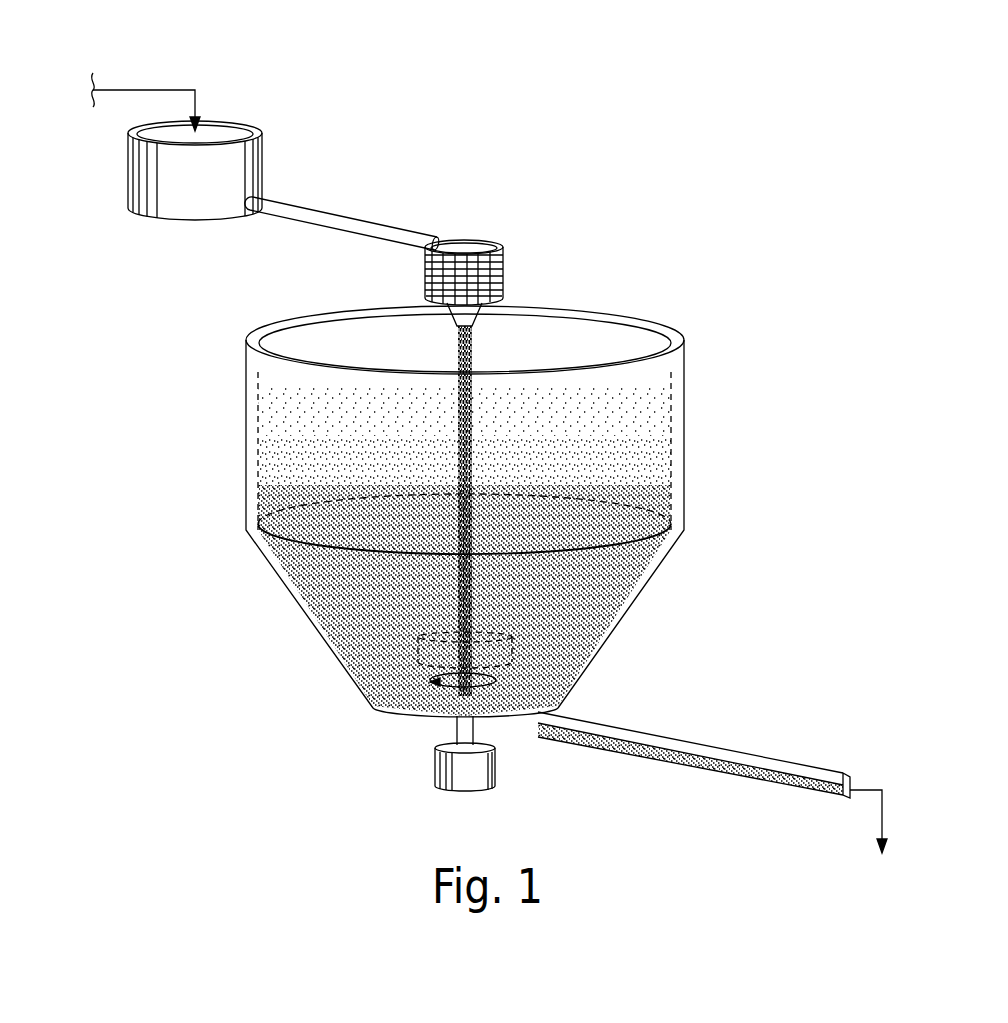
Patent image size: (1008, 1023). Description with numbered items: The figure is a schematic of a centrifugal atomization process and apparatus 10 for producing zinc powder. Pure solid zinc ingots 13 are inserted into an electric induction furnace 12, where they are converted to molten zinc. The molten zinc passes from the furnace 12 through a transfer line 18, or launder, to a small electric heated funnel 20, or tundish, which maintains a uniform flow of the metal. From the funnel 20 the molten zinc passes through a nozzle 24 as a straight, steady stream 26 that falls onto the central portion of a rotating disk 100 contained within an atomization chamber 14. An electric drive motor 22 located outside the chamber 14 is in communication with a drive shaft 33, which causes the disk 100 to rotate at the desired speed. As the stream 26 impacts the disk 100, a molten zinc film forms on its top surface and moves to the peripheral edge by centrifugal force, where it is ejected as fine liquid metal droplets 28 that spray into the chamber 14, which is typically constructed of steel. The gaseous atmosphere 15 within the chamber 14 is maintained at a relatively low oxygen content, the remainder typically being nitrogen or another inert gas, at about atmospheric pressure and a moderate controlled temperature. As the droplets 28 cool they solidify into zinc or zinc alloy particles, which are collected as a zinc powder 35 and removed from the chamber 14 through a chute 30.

The centrifugal atomization apparatus 10 is at (658, 228).
The electric induction furnace 12 is at (127, 168).
The zinc ingots 13 is at (123, 90).
The atomization chamber 14 is at (229, 433).
The gaseous atmosphere 15 is at (262, 483).
The transfer line 18 is at (337, 214).
The electric heated funnel 20 is at (504, 262).
The electric drive motor 22 is at (436, 774).
The nozzle 24 is at (482, 312).
The stream of molten zinc 26 is at (458, 362).
The liquid metal droplets 28 is at (360, 645).
The chute 30 is at (638, 754).
The drive shaft 33 is at (456, 725).
The zinc powder 35 is at (762, 778).
The rotating disk 100 is at (512, 645).